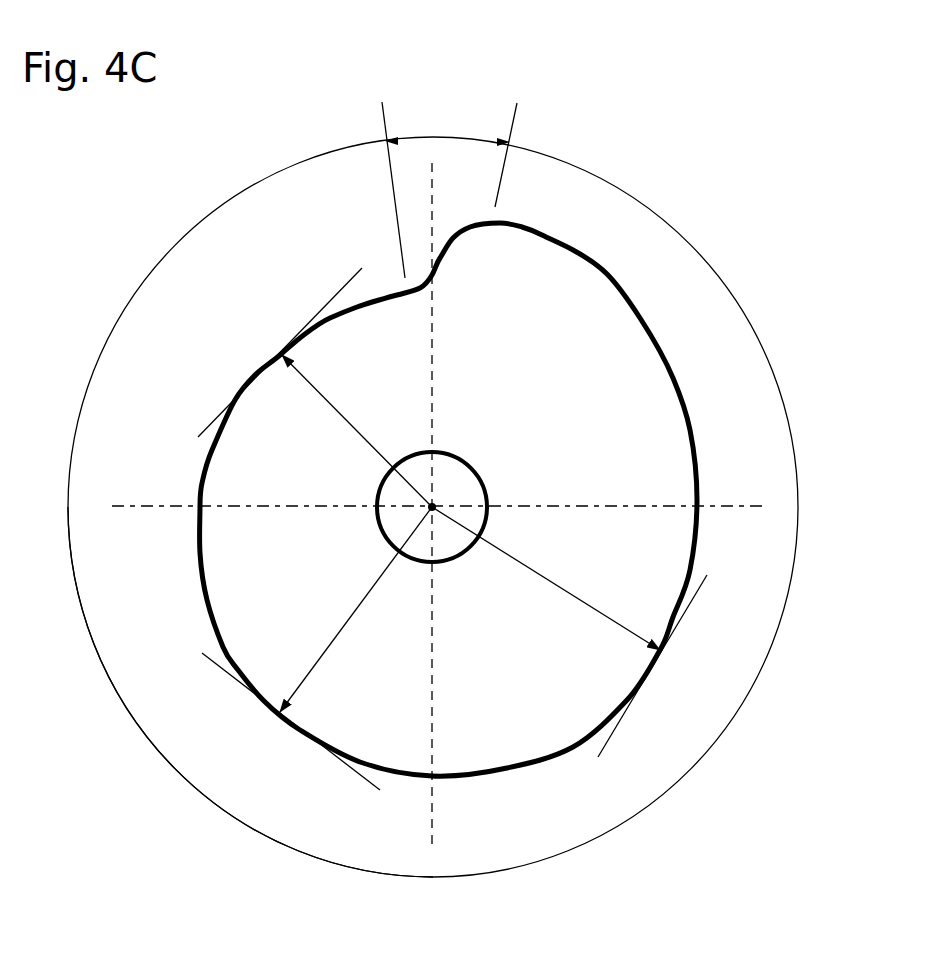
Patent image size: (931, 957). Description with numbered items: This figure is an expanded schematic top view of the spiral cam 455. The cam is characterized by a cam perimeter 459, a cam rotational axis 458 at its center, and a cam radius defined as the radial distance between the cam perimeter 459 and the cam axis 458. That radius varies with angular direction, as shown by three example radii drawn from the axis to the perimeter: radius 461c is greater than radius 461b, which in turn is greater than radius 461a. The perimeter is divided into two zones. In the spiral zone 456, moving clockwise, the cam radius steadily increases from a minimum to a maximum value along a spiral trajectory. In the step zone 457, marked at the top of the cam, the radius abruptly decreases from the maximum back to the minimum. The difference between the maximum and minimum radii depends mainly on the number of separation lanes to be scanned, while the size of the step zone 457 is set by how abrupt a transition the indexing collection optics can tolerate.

The spiral cam 455 is at (710, 208).
The spiral zone 456 is at (228, 818).
The step zone 457 is at (458, 137).
The cam rotational axis 458 is at (436, 504).
The cam perimeter 459 is at (687, 423).
The cam radius 461a is at (327, 402).
The cam radius 461b is at (348, 618).
The cam radius 461c is at (577, 600).